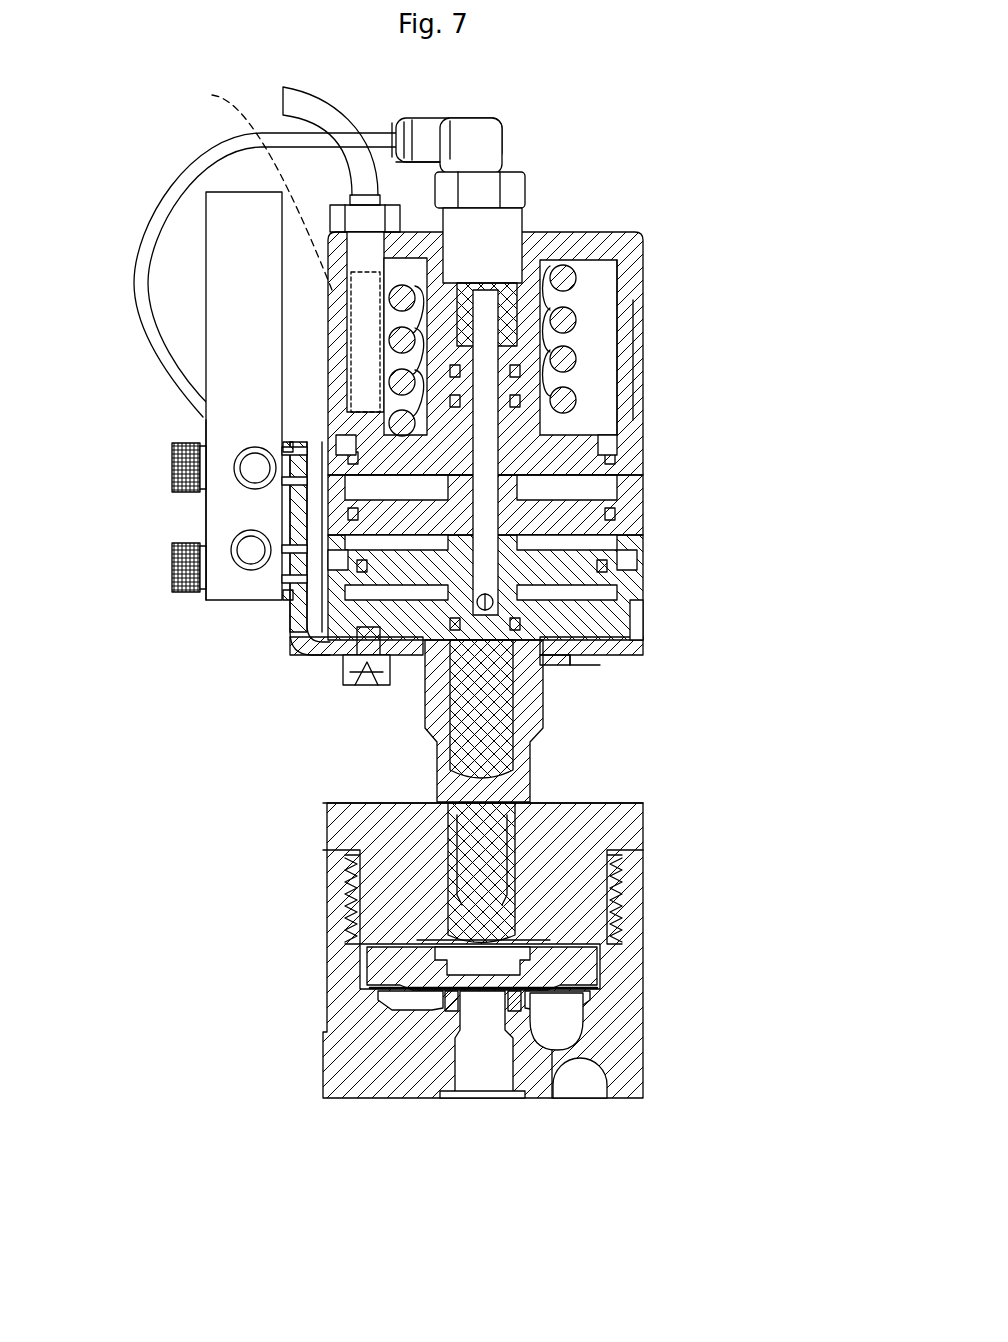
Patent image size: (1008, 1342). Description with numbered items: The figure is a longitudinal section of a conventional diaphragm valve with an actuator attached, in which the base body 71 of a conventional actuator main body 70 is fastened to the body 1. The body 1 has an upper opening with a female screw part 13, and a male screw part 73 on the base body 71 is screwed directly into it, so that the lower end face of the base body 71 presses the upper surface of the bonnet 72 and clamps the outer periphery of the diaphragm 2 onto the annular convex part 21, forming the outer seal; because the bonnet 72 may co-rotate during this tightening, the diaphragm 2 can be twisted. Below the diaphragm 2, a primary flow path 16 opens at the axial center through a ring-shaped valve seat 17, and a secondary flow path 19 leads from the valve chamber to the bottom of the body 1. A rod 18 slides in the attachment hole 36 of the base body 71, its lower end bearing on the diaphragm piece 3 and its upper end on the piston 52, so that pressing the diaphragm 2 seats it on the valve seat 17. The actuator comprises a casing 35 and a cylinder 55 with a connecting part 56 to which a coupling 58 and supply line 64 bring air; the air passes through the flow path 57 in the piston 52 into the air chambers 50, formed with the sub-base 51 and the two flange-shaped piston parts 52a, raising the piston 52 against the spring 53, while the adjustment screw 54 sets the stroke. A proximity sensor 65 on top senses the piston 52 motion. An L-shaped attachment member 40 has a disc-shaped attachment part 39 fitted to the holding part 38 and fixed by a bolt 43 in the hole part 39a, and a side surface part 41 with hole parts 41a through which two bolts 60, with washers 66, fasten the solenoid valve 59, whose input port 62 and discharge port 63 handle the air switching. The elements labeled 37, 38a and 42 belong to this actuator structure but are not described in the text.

The body 1 is at (645, 1072).
The diaphragm 2 is at (392, 992).
The diaphragm piece 3 is at (482, 1000).
The female screw part 13 is at (350, 878).
The primary flow path 16 is at (558, 1032).
The valve seat 17 is at (450, 1010).
The rod 18 is at (497, 810).
The secondary flow path 19 is at (592, 1075).
The annular convex part 21 is at (372, 990).
The casing 35 is at (585, 522).
The attachment hole 36 is at (520, 732).
The rod holder 37 is at (432, 728).
The holding part 38 is at (590, 647).
The flange step 38a is at (560, 660).
The attachment part 39 is at (352, 652).
The hole part 39a is at (378, 660).
The attachment member 40 is at (282, 600).
The side surface part 41 is at (298, 638).
The hole part 41a is at (290, 470).
The housing lower portion 42 is at (640, 655).
The bolt 43 is at (365, 672).
The air chambers 50 is at (600, 466).
The sub-base 51 is at (608, 492).
The piston 52 is at (622, 355).
The piston parts 52a is at (612, 445).
The spring 53 is at (580, 320).
The adjustment screw 54 is at (453, 330).
The cylinder 55 is at (630, 250).
The connecting part 56 is at (488, 232).
The flow path 57 is at (492, 596).
The coupling 58 is at (490, 178).
The solenoid valve 59 is at (196, 521).
The bolts 60 is at (175, 455).
The input port 62 is at (240, 553).
The discharge port 63 is at (240, 468).
The supply line 64 is at (143, 268).
The proximity sensor 65 is at (289, 185).
The washer 66 is at (290, 446).
The actuator main body 70 is at (790, 573).
The base body 71 is at (595, 815).
The bonnet 72 is at (600, 972).
The male screw part 73 is at (625, 880).